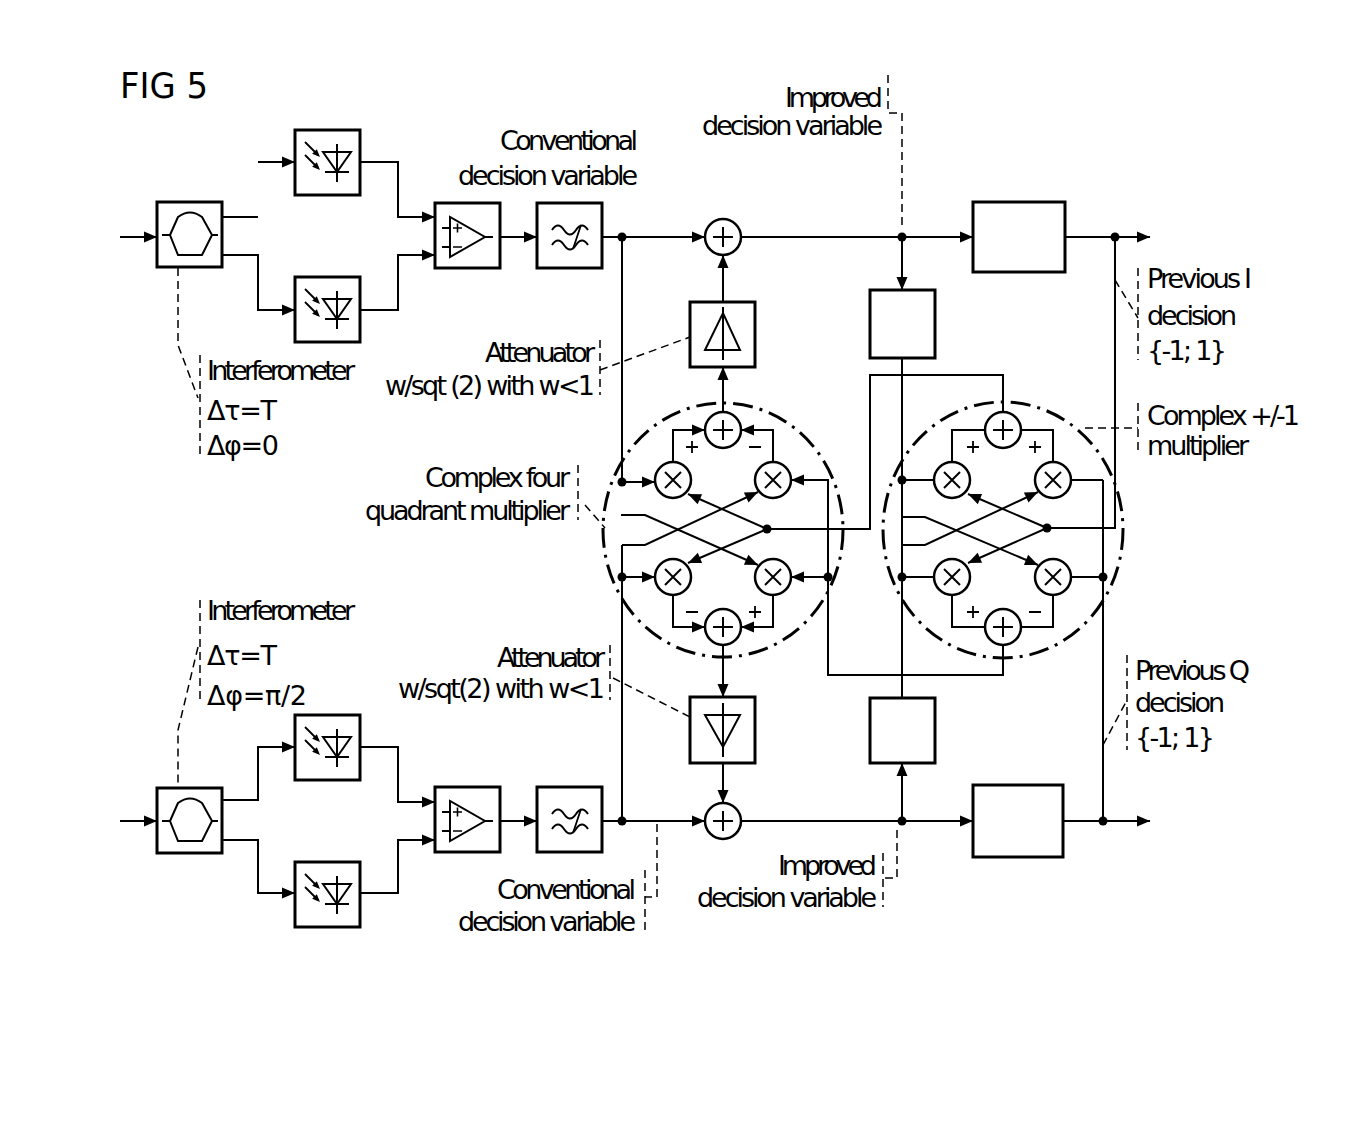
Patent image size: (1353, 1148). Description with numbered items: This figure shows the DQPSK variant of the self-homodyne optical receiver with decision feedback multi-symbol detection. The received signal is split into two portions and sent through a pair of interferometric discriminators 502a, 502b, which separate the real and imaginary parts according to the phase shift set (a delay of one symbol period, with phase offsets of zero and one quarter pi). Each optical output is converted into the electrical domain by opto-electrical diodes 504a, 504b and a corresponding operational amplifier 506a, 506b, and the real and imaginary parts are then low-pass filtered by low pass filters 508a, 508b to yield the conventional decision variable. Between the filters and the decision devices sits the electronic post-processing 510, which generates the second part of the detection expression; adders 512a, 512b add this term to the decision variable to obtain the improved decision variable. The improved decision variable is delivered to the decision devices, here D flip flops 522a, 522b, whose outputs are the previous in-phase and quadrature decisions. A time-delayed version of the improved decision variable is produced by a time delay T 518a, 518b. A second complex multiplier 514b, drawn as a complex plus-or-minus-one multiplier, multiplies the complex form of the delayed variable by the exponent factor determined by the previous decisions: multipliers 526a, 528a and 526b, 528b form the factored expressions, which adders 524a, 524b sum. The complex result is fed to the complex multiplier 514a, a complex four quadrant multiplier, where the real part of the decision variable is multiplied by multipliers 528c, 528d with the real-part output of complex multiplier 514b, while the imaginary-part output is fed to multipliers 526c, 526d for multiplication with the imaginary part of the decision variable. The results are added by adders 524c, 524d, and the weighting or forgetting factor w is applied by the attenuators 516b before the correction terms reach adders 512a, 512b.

The interferometric discriminator 502a is at (188, 202).
The interferometric discriminator 502b is at (190, 854).
The opto-electrical diodes 504a is at (340, 196).
The opto-electrical diodes 504b is at (340, 781).
The operational amplifier 506a is at (470, 269).
The operational amplifier 506b is at (470, 787).
The low pass filter 508a is at (568, 269).
The low pass filter 508b is at (572, 787).
The electronic post-processing 510 is at (570, 550).
The adder 512a is at (722, 217).
The adder 512b is at (723, 821).
The complex multiplier 514a is at (746, 405).
The complex multiplier 514b is at (1124, 530).
The attenuator 516b is at (756, 323).
The time delay T 518a is at (936, 321).
The time delay T 518b is at (936, 733).
The D flip flop 522a is at (1028, 202).
The D flip flop 522b is at (1018, 858).
The adder 524a is at (1010, 405).
The adder 524b is at (1014, 644).
The adder 524c is at (706, 418).
The adder 524d is at (736, 645).
The multiplier 526a is at (1062, 462).
The multiplier 526b is at (1063, 594).
The multiplier 526c is at (787, 464).
The multiplier 526d is at (786, 593).
The multiplier 528a is at (945, 462).
The multiplier 528b is at (937, 591).
The multiplier 528c is at (657, 466).
The multiplier 528d is at (658, 592).